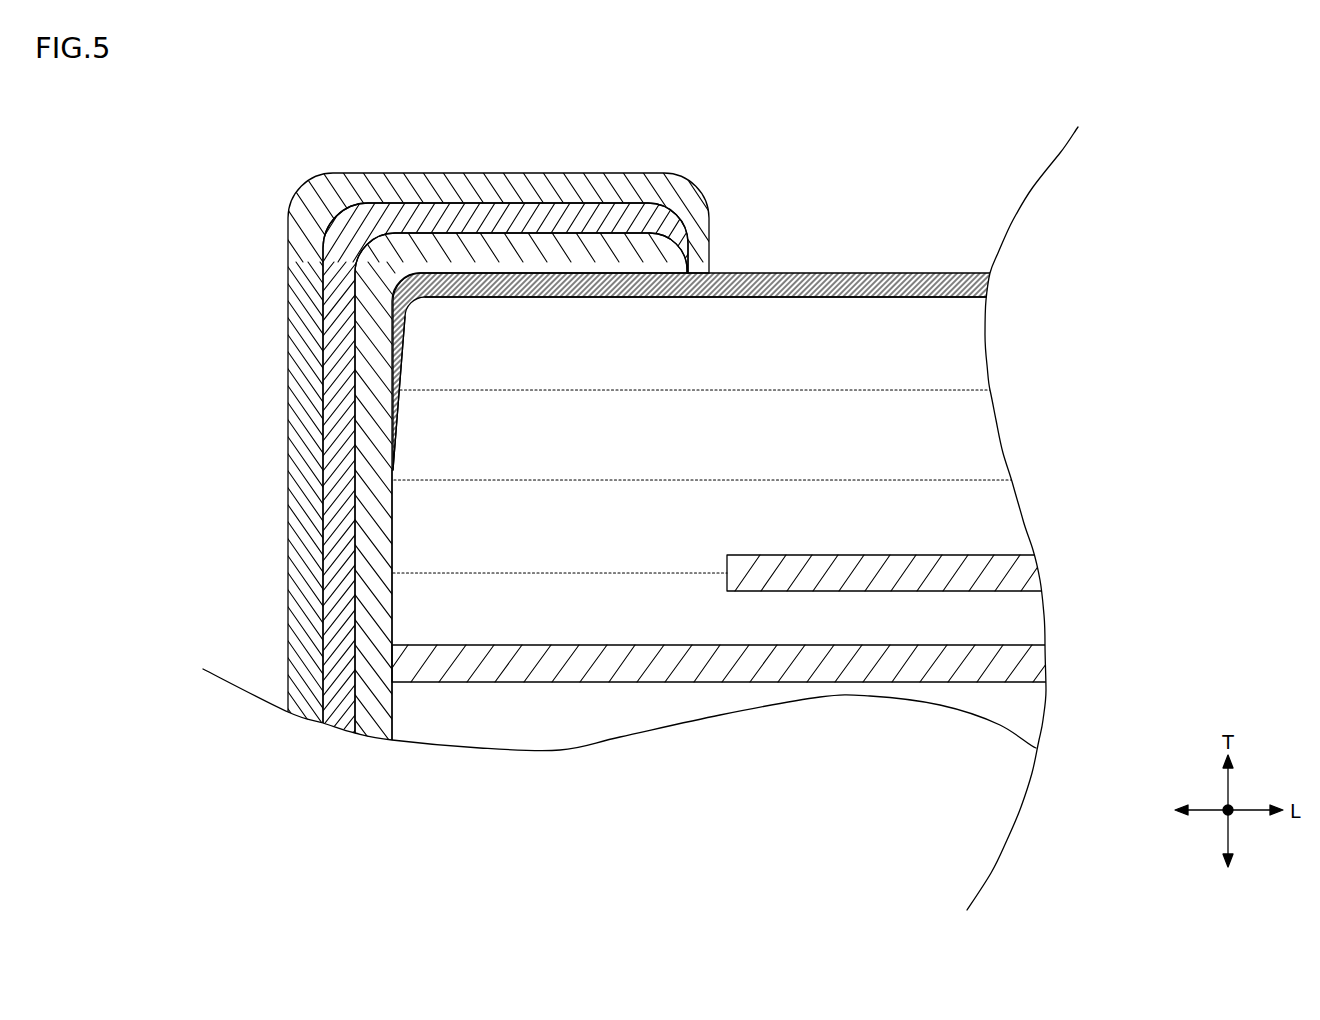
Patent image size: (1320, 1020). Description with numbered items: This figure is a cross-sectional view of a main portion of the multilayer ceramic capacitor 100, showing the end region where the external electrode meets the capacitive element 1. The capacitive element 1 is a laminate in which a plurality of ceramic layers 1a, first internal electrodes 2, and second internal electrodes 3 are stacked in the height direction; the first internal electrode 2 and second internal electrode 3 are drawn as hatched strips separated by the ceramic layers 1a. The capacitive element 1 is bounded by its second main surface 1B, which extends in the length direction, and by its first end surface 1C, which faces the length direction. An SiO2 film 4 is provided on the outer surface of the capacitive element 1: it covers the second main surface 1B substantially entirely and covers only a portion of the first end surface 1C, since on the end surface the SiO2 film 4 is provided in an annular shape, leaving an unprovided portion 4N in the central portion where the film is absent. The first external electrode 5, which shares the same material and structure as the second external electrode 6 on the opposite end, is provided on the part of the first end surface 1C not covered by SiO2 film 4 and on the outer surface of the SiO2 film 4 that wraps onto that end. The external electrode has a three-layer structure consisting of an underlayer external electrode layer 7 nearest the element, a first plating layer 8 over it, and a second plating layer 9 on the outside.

The multilayer ceramic capacitor 100 is at (151, 109).
The capacitive element 1 is at (852, 330).
The ceramic layer 1a is at (947, 347).
The second main surface 1B is at (920, 286).
The first end surface 1C is at (383, 609).
The first internal electrode 2 is at (1015, 668).
The second internal electrode 3 is at (1000, 574).
The SiO2 film 4 is at (776, 286).
The unprovided portion 4N is at (383, 518).
The first external electrode 5 is at (499, 443).
The second external electrode 6 is at (515, 105).
The underlayer external electrode layer 7 is at (453, 257).
The first plating layer 8 is at (477, 217).
The second plating layer 9 is at (502, 192).